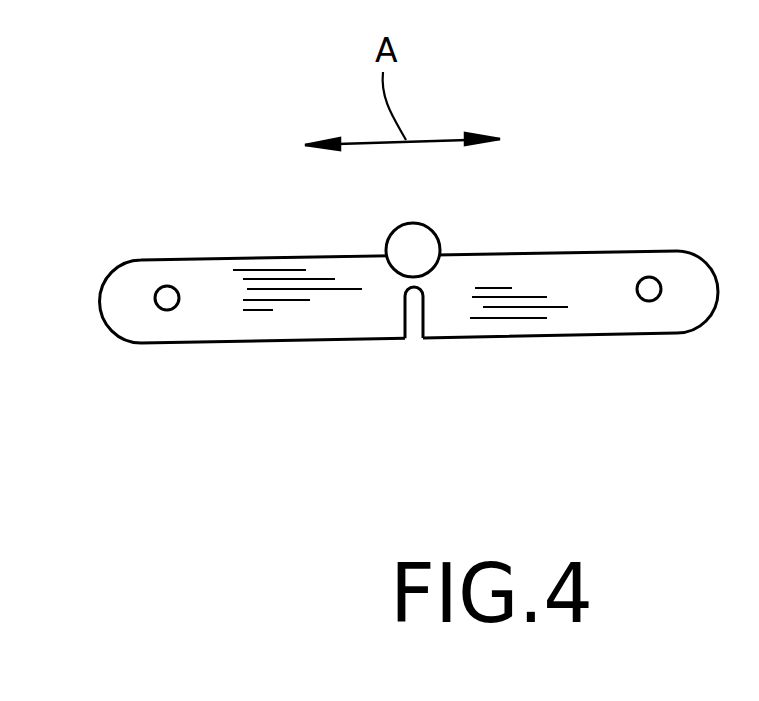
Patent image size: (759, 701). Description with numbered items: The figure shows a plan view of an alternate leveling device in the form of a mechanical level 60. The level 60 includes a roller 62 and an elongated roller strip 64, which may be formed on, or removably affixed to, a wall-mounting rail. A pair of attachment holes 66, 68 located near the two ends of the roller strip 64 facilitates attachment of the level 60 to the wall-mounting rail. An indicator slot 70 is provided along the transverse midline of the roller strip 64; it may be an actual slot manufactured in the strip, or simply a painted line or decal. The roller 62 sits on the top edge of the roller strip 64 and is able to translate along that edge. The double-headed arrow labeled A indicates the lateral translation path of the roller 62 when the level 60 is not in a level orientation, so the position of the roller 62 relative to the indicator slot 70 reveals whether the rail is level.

The mechanical level 60 is at (402, 263).
The roller 62 is at (422, 225).
The roller strip 64 is at (578, 270).
The attachment hole 66 is at (165, 310).
The attachment hole 68 is at (647, 301).
The indicator slot 70 is at (403, 330).